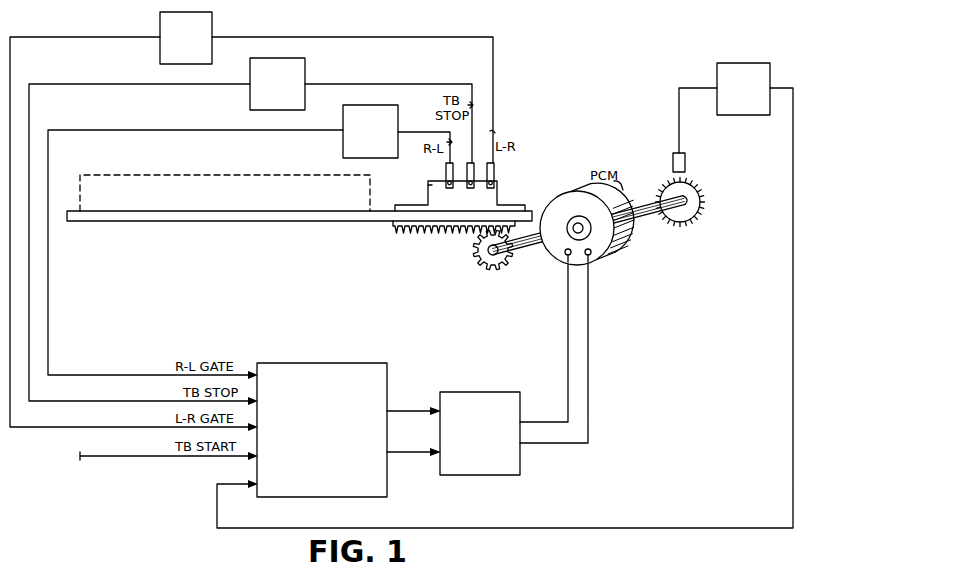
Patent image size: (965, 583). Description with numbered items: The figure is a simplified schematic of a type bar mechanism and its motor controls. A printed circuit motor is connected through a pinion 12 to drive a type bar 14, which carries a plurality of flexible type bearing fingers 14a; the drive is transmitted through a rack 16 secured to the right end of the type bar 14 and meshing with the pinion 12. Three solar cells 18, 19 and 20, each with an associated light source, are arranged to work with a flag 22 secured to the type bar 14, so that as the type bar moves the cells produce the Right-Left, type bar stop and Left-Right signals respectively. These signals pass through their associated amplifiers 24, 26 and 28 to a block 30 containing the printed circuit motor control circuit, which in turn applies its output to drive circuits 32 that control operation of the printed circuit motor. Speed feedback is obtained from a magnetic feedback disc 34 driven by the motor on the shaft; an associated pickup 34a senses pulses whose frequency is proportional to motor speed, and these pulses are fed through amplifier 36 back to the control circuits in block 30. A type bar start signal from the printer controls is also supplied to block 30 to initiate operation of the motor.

The pinion 12 is at (497, 266).
The type bar 14 is at (268, 223).
The flexible type bearing fingers 14a is at (130, 174).
The rack 16 is at (436, 235).
The solar cell 18 is at (446, 169).
The solar cell 19 is at (471, 166).
The solar cell 20 is at (494, 171).
The flag 22 is at (428, 186).
The amplifier 24 is at (343, 150).
The amplifier 26 is at (250, 94).
The amplifier 28 is at (160, 51).
The printed circuit motor control circuit block 30 is at (314, 363).
The drive circuits 32 is at (466, 392).
The magnetic feedback disc 34 is at (701, 196).
The pickup 34a is at (692, 155).
The amplifier 36 is at (736, 63).